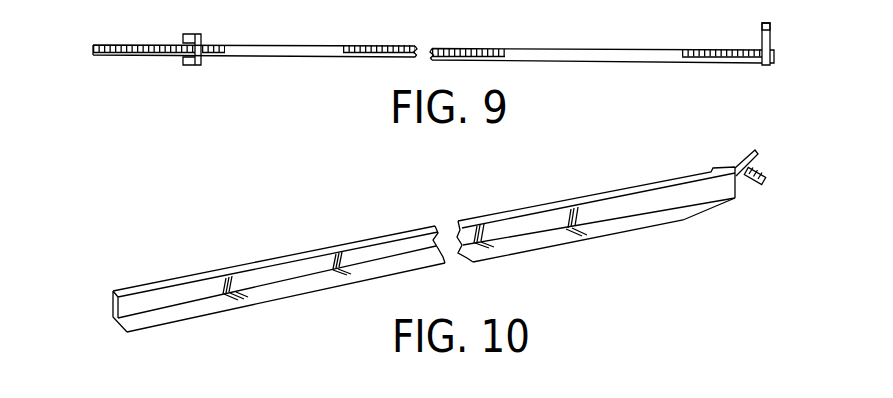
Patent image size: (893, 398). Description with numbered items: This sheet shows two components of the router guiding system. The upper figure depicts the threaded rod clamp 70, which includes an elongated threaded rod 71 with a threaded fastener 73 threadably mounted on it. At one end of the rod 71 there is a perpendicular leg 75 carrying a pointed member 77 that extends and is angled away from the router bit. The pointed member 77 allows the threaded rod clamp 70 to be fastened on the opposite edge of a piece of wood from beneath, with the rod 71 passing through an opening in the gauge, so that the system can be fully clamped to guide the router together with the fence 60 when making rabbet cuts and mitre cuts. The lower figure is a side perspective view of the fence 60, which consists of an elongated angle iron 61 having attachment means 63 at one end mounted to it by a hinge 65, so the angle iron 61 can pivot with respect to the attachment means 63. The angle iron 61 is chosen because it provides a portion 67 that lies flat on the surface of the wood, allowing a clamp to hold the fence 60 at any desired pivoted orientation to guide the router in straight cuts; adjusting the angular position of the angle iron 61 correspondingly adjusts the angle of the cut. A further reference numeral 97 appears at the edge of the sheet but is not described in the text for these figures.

In FIG. 10, the fence 60 is at (459, 265).
In FIG. 10, the elongated angle iron 61 is at (424, 256).
In FIG. 10, the attachment means 63 is at (764, 170).
In FIG. 10, the hinge 65 is at (733, 164).
In FIG. 10, the flat portion of angle iron 67 is at (267, 305).
In FIG. 9, the threaded rod clamp 70 is at (464, 92).
In FIG. 9, the elongated threaded rod 71 is at (369, 58).
In FIG. 9, the threaded fastener 73 is at (191, 64).
In FIG. 9, the perpendicular leg 75 is at (772, 47).
In FIG. 9, the pointed member 77 is at (763, 29).
In FIG. 10, the element 97 is at (718, 393).